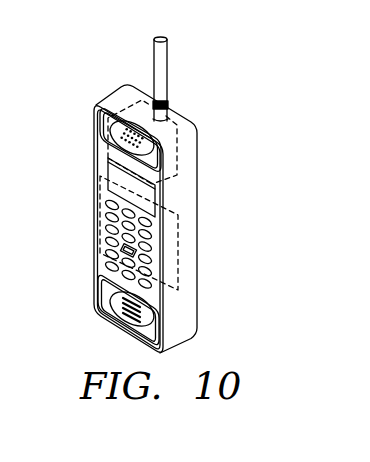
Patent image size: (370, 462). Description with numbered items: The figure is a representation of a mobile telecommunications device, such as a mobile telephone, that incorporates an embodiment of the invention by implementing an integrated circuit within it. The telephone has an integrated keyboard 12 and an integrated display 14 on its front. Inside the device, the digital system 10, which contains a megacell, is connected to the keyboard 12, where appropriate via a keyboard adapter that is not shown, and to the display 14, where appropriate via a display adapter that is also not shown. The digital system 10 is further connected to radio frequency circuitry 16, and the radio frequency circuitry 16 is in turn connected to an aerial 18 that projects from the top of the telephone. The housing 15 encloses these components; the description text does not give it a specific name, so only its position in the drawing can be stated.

The digital system 10 is at (180, 248).
The keyboard 12 is at (112, 236).
The display 14 is at (113, 175).
The housing 15 is at (189, 320).
The radio frequency (RF) circuitry 16 is at (178, 160).
The aerial 18 is at (161, 63).